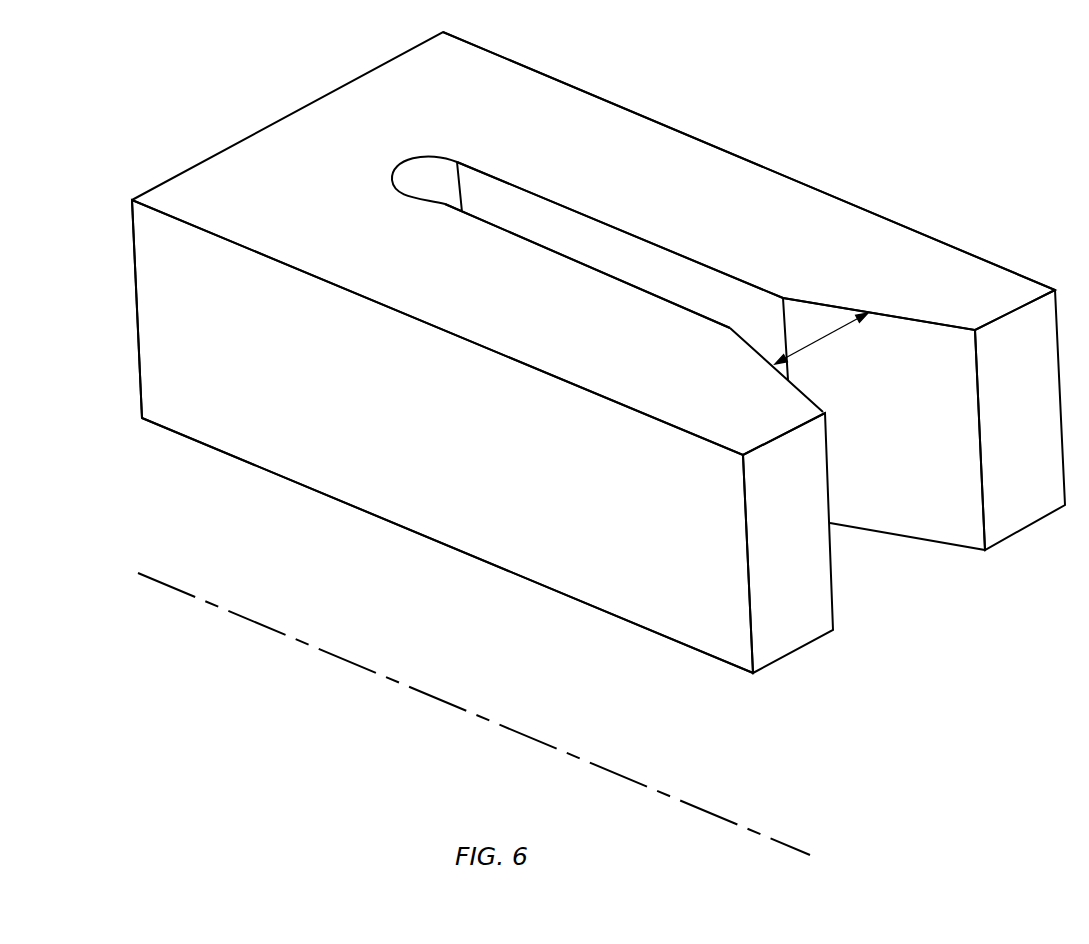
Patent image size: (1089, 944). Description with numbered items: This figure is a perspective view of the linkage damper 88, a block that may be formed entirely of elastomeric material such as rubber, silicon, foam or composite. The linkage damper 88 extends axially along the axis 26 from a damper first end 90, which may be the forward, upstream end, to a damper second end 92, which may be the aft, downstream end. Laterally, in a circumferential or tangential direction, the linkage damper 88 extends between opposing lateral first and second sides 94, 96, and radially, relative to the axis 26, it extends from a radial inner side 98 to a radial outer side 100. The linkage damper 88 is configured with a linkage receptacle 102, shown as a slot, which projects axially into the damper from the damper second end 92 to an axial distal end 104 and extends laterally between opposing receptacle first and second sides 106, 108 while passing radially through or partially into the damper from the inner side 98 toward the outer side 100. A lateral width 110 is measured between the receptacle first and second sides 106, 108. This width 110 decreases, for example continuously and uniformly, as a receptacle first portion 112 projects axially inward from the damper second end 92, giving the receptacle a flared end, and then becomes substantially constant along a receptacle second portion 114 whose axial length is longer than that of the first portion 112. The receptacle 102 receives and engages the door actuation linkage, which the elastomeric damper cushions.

The linkage damper 88 is at (576, 352).
The damper first end 90 is at (140, 342).
The damper second end 92 is at (749, 537).
The damper lateral first side 94 is at (588, 390).
The damper lateral second side 96 is at (932, 235).
The damper radial inner side 98 is at (233, 458).
The damper radial outer side 100 is at (252, 250).
The linkage receptacle 102 is at (587, 209).
The receptacle axial distal end 104 is at (424, 169).
The receptacle lateral first side 106 is at (552, 246).
The receptacle lateral second side 108 is at (560, 206).
The receptacle lateral width 110 is at (817, 340).
The receptacle first portion 112 is at (885, 351).
The receptacle second portion 114 is at (722, 300).
The axis 26 is at (232, 612).